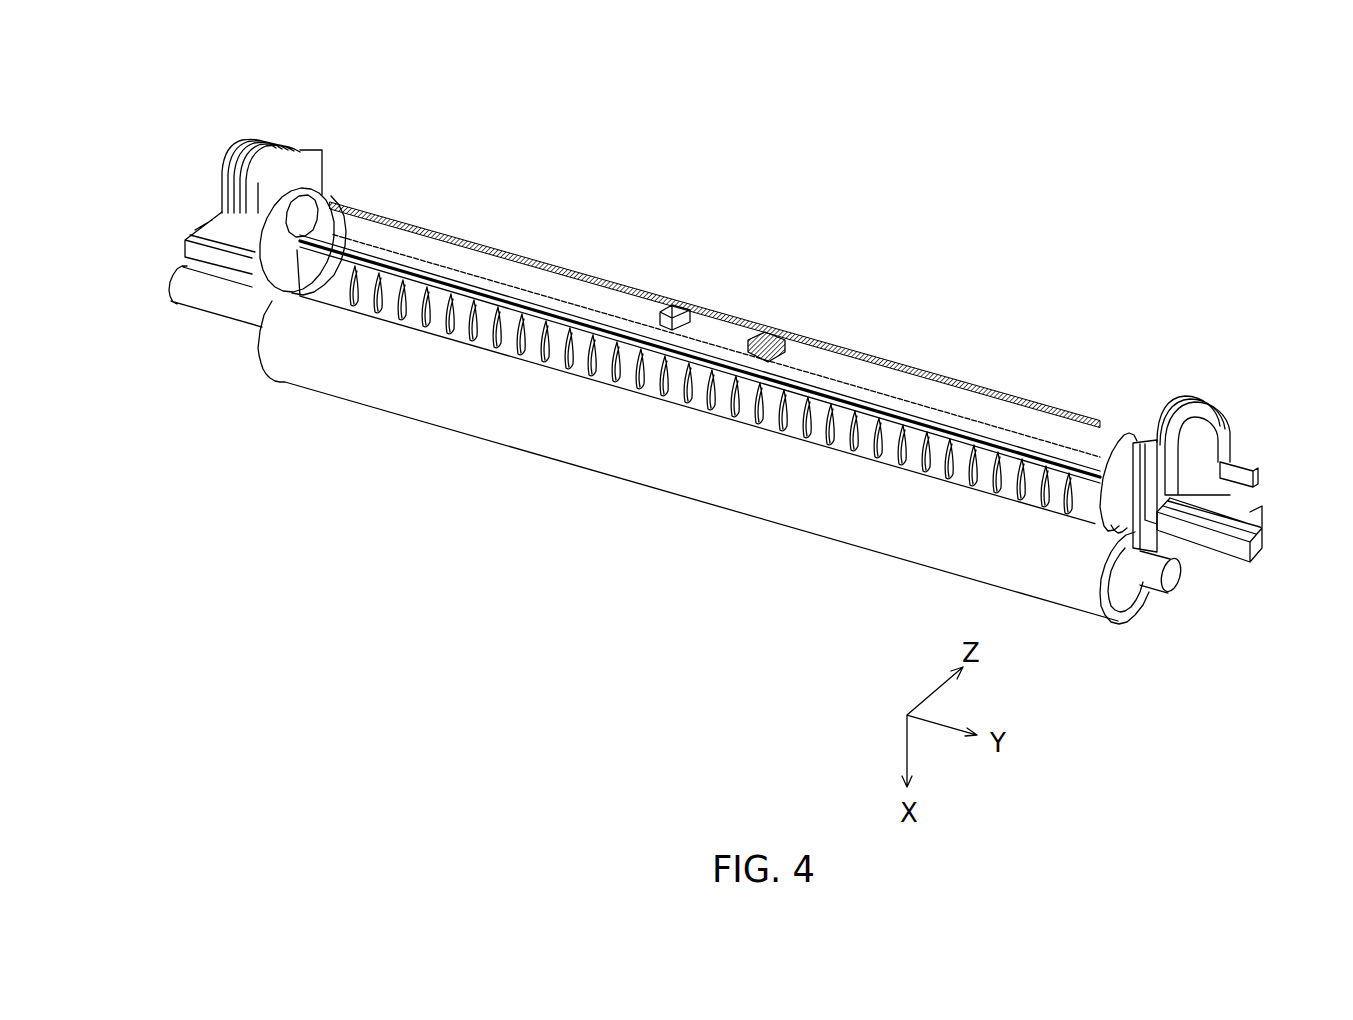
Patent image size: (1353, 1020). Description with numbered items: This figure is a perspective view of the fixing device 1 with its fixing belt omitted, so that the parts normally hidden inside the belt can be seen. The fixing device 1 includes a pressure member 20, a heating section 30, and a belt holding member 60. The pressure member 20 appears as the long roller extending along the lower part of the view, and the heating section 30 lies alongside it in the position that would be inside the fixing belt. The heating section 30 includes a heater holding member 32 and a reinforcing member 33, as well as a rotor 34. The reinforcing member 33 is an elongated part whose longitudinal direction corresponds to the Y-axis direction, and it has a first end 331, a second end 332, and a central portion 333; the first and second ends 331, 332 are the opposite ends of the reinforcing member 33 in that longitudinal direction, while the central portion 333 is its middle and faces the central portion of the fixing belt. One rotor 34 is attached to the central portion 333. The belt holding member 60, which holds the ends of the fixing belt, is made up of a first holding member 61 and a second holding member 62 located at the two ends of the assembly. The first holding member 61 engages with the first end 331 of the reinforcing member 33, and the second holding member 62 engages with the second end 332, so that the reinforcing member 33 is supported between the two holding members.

The fixing device 1 is at (1003, 247).
The pressure member 20 is at (647, 467).
The heating section 30 is at (890, 340).
The heater holding member 32 is at (860, 440).
The reinforcing member 33 is at (557, 282).
The rotor 34 is at (718, 328).
The first end 331 is at (327, 213).
The second end 332 is at (1120, 423).
The central portion 333 is at (747, 320).
The belt holding member 60 is at (745, 312).
The first holding member 61 is at (293, 158).
The second holding member 62 is at (1203, 407).